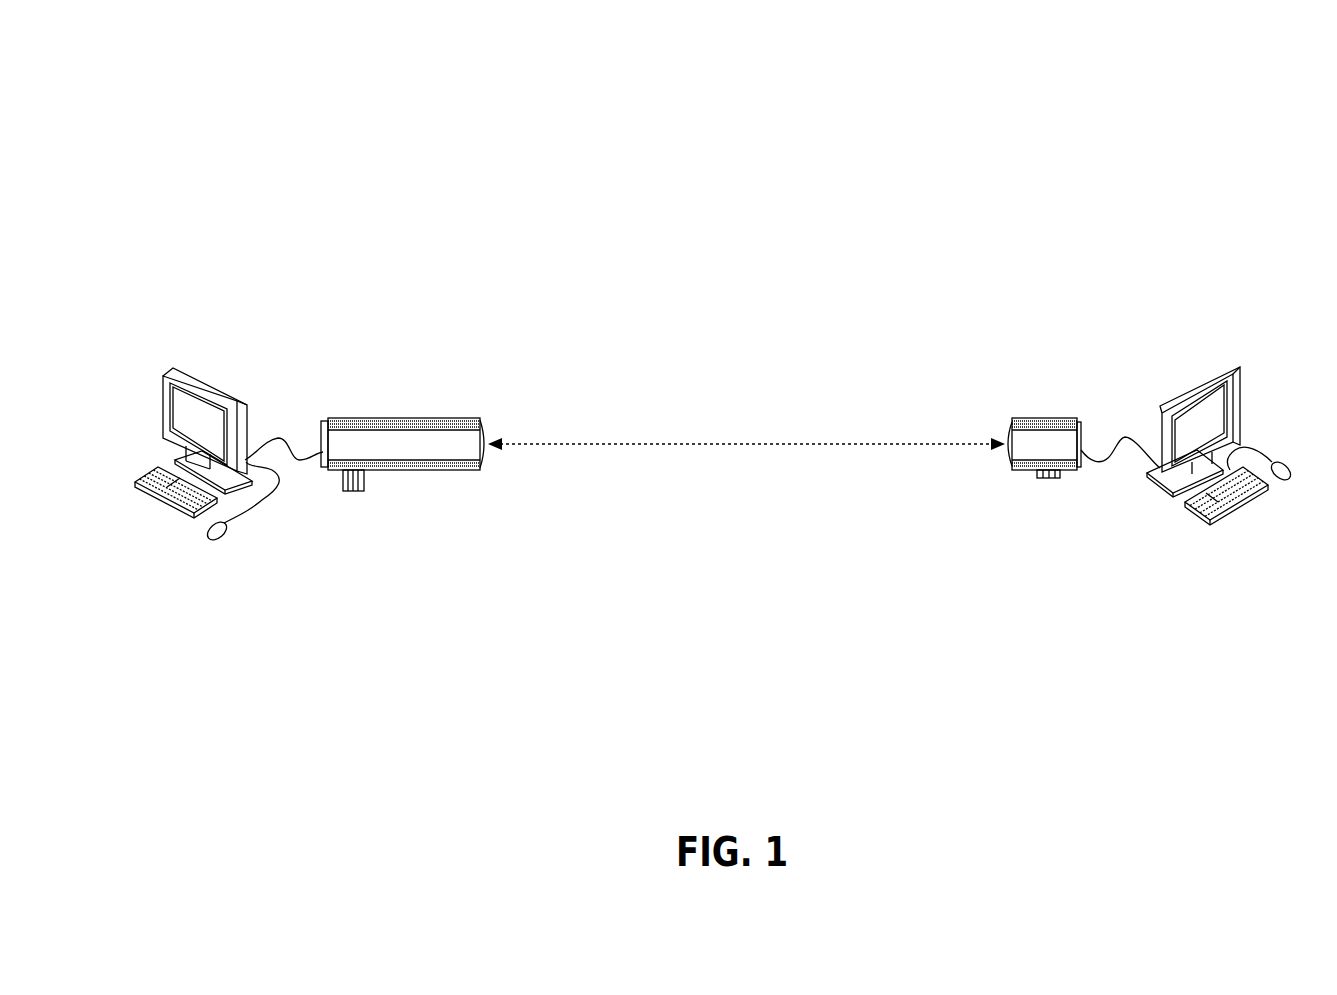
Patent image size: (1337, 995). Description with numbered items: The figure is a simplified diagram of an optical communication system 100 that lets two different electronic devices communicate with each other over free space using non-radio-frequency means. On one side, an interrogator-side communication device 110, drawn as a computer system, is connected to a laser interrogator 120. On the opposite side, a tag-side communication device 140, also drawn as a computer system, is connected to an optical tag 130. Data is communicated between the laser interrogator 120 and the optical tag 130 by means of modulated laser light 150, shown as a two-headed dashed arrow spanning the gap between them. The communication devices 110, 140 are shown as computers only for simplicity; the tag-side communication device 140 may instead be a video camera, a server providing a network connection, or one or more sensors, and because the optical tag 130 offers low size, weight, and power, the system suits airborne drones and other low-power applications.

The optical communication system 100 is at (424, 104).
The interrogator-side communication device 110 is at (195, 384).
The laser interrogator 120 is at (408, 385).
The optical tag 130 is at (1030, 418).
The tag-side communication device 140 is at (1212, 376).
The modulated laser light 150 is at (775, 443).